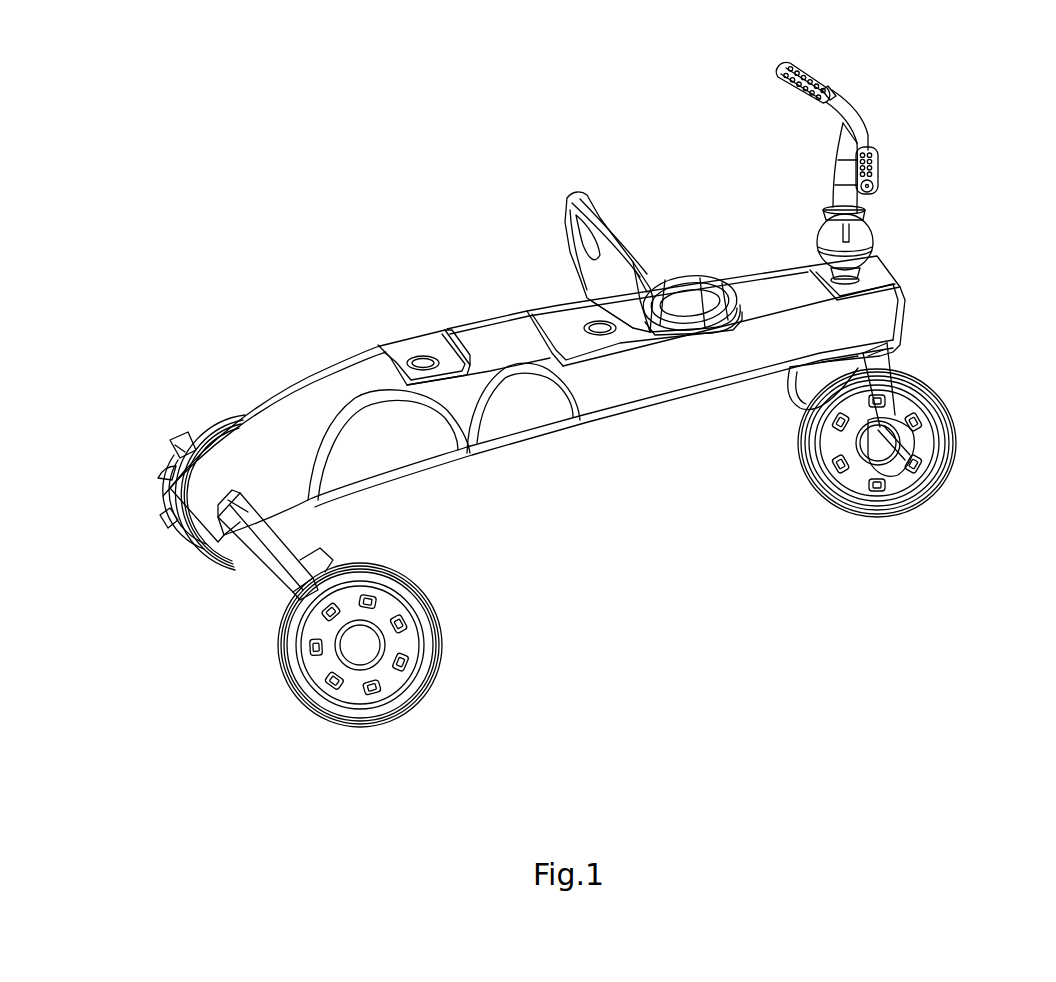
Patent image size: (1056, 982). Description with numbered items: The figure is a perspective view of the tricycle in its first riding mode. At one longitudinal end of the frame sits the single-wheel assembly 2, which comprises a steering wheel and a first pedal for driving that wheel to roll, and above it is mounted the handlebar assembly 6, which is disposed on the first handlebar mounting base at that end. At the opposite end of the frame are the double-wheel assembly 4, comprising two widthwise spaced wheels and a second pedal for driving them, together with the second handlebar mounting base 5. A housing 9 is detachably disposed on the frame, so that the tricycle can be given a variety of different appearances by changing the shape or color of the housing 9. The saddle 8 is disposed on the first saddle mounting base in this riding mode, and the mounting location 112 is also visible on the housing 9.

The housing 9 is at (531, 368).
The second handlebar mounting base 5 is at (415, 357).
The seat mounting hole 112 is at (583, 313).
The saddle 8 is at (658, 272).
The handlebar assembly 6 is at (843, 207).
The single-wheel assembly 2 is at (950, 437).
The double-wheel assembly 4 is at (435, 640).